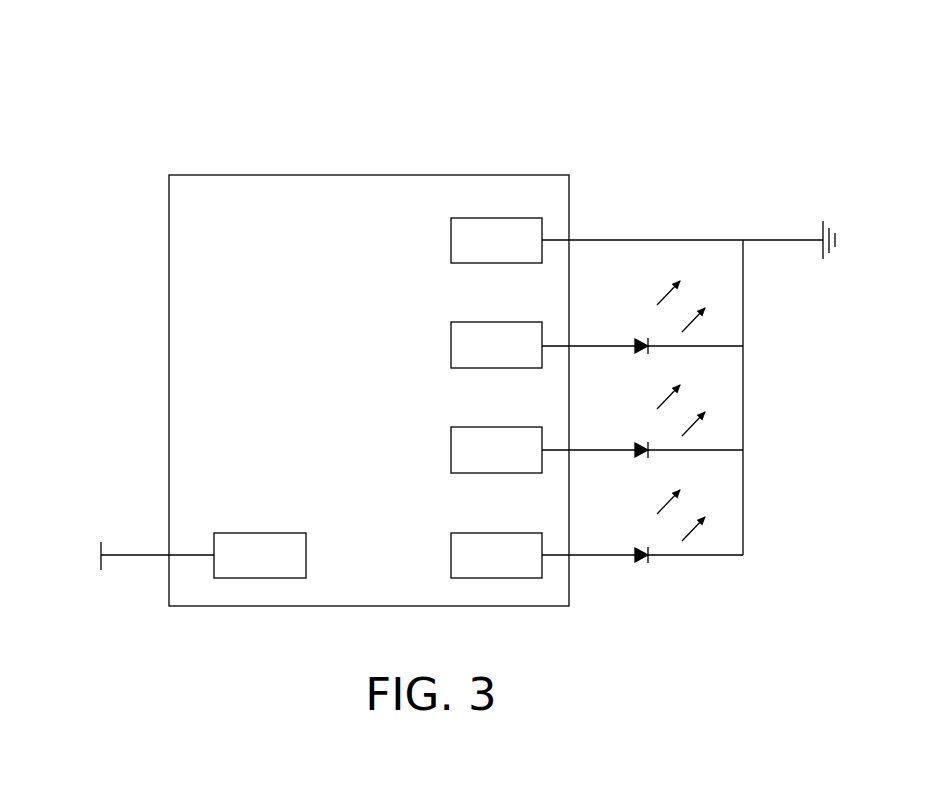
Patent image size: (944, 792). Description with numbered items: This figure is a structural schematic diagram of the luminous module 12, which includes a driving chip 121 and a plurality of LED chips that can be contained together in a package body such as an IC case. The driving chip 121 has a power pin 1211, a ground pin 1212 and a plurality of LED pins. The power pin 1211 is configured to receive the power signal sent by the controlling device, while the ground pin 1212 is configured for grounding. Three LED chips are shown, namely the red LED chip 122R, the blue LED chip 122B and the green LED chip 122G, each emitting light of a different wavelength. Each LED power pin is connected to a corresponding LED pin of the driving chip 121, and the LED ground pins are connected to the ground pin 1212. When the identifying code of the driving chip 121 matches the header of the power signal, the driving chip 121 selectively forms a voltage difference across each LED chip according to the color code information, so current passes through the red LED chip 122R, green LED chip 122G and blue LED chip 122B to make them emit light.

The luminous module 12 is at (480, 102).
The driving chip 121 is at (351, 174).
The power pin 1211 is at (227, 532).
The ground pin 1212 is at (530, 218).
The red LED chip 122R is at (646, 332).
The blue LED chip 122B is at (647, 443).
The green LED chip 122G is at (647, 545).